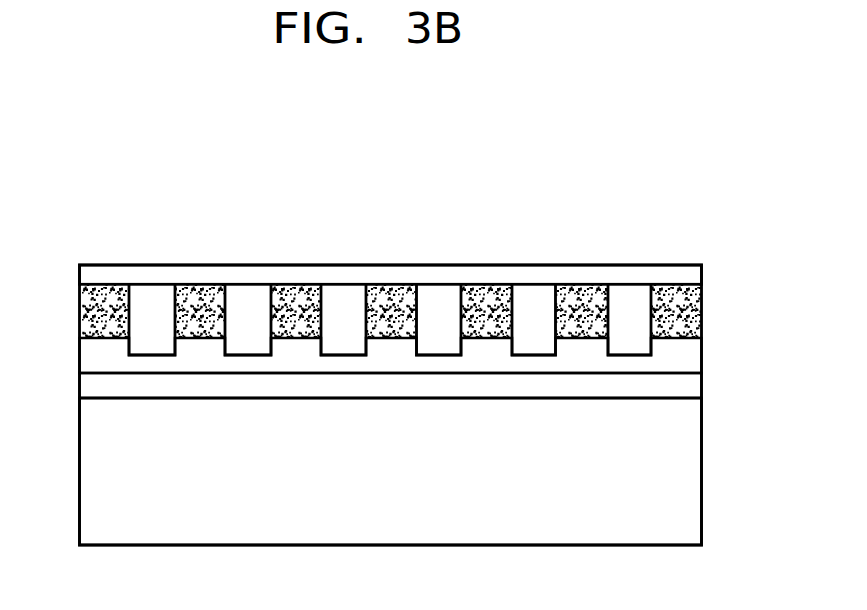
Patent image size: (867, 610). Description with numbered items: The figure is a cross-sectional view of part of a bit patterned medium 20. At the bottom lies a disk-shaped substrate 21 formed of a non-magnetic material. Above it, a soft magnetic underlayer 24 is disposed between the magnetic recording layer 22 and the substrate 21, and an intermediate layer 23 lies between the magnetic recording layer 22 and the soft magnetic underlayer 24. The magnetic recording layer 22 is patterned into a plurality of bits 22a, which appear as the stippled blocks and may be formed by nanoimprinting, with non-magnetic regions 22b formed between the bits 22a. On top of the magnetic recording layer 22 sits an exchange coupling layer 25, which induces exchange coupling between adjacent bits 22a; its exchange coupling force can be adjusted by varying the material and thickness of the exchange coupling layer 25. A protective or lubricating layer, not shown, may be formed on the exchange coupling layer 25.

The bit patterned medium 20 is at (127, 227).
The substrate 21 is at (693, 482).
The magnetic recording layer 22 is at (391, 254).
The bits 22a is at (580, 300).
The non-magnetic regions 22b is at (637, 310).
The intermediate layer 23 is at (693, 354).
The soft magnetic underlayer 24 is at (693, 388).
The exchange coupling layer 25 is at (693, 275).